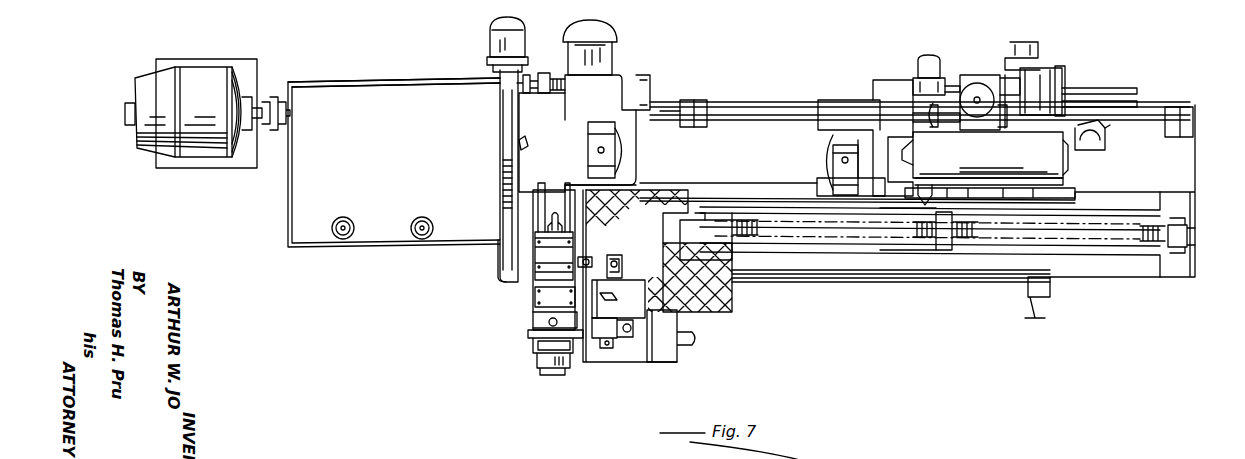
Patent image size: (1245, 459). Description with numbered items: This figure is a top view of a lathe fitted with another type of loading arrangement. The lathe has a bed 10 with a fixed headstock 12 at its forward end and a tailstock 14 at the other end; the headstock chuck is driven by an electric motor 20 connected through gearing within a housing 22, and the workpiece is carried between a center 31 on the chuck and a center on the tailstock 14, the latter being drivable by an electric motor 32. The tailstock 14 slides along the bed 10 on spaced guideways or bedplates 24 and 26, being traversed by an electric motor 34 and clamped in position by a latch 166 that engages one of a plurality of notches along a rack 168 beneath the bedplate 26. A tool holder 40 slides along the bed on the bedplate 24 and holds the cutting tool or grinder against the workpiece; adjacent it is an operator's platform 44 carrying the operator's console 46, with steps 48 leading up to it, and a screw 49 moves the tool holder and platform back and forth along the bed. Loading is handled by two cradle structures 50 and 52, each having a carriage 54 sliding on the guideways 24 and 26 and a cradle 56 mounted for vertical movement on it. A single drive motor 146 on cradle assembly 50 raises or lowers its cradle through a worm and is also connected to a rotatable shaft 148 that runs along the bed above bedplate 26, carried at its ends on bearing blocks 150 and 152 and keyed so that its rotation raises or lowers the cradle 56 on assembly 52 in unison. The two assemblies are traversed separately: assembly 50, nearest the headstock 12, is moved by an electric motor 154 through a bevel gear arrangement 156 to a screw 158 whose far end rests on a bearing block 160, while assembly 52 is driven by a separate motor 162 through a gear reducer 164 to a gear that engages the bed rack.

The bed 10 is at (767, 176).
The headstock 12 is at (403, 165).
The tailstock 14 is at (1020, 159).
The electric motor 20 is at (210, 82).
The housing 22 is at (385, 249).
The guideway or bedplate 24 is at (1112, 197).
The guideway or bedplate 26 is at (763, 121).
The center 31 is at (519, 140).
The electric motor 32 is at (1060, 70).
The electric motor 34 is at (1035, 46).
The tool holder or carrier 40 is at (535, 297).
The operator's platform 44 is at (728, 312).
The operator's console 46 is at (685, 245).
The steps 48 is at (690, 358).
The screw 49 is at (877, 230).
The cradle structure 50 is at (562, 161).
The cradle structure 52 is at (807, 191).
The carriage 54 is at (622, 163).
The cradle 56 is at (615, 143).
The drive motor 146 is at (612, 30).
The rotatable shaft 148 is at (748, 118).
The bearing block 150 is at (688, 100).
The bearing block 152 is at (1172, 112).
The electric motor 154 is at (502, 43).
The bevel gear arrangement 156 is at (503, 78).
The screw 158 is at (541, 92).
The bearing block 160 is at (645, 80).
The motor 162 is at (929, 58).
The gear reducer 164 is at (888, 93).
The latch 166 is at (1110, 142).
The rack 168 is at (1098, 120).